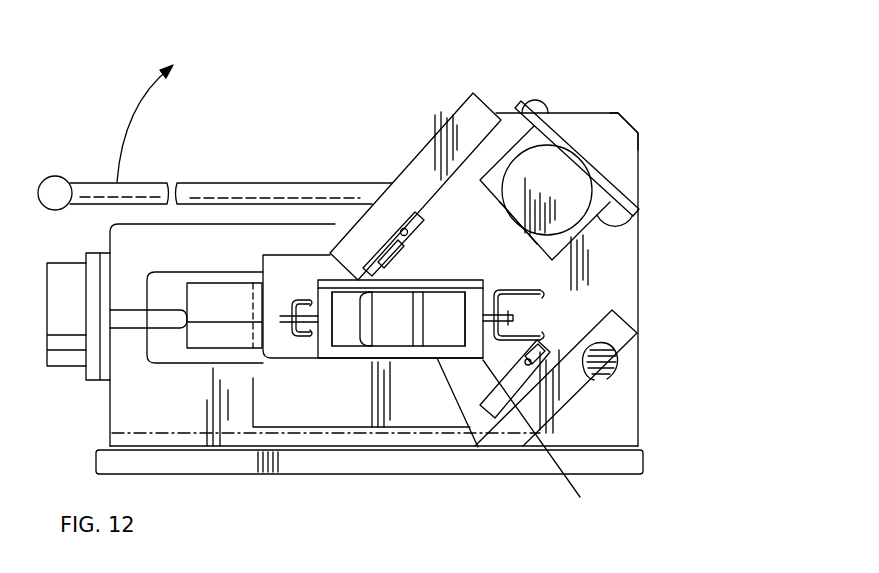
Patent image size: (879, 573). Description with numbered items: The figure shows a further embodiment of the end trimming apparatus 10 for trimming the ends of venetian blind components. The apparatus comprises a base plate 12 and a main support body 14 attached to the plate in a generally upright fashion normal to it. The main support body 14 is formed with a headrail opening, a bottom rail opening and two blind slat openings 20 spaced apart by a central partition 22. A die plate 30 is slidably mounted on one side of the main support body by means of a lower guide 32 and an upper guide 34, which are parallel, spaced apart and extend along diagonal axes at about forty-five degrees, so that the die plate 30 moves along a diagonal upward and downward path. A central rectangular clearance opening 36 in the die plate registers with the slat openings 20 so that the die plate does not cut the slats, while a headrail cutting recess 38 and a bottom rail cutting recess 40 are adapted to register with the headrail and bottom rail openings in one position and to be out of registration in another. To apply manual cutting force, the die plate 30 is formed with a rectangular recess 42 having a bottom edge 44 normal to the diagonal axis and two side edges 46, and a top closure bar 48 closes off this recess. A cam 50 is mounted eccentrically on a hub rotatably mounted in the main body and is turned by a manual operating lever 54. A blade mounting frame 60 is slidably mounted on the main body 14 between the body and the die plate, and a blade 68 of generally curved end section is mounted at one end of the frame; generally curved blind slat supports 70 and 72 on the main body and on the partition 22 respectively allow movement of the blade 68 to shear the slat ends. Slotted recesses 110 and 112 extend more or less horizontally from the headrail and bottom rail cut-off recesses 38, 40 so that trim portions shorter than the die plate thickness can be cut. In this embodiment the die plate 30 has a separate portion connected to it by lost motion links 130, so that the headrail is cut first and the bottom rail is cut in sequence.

The end trimming apparatus 10 is at (293, 98).
The base plate 12 is at (205, 467).
The main support body 14 is at (182, 245).
The blind slat openings 20 is at (380, 304).
The central partition 22 is at (395, 292).
The die plate 30 is at (627, 288).
The lower guide 32 is at (607, 367).
The upper guide 34 is at (430, 158).
The central rectangular clearance opening 36 is at (423, 352).
The headrail cutting recess 38 is at (521, 345).
The bottom rail cutting recess 40 is at (305, 340).
The rectangular recess 42 is at (568, 170).
The bottom edge 44 is at (523, 243).
The side edges 46 is at (517, 107).
The top closure bar 48 is at (600, 160).
The cam 50 is at (588, 148).
The manual operating lever 54 is at (356, 190).
The blade mounting frame 60 is at (340, 318).
The blade 68 is at (386, 326).
The blind slat support 70 is at (473, 322).
The blind slat support 72 is at (428, 300).
The slotted recess 110 is at (513, 318).
The slotted recess 112 is at (284, 319).
The lost motion links 130 is at (386, 228).